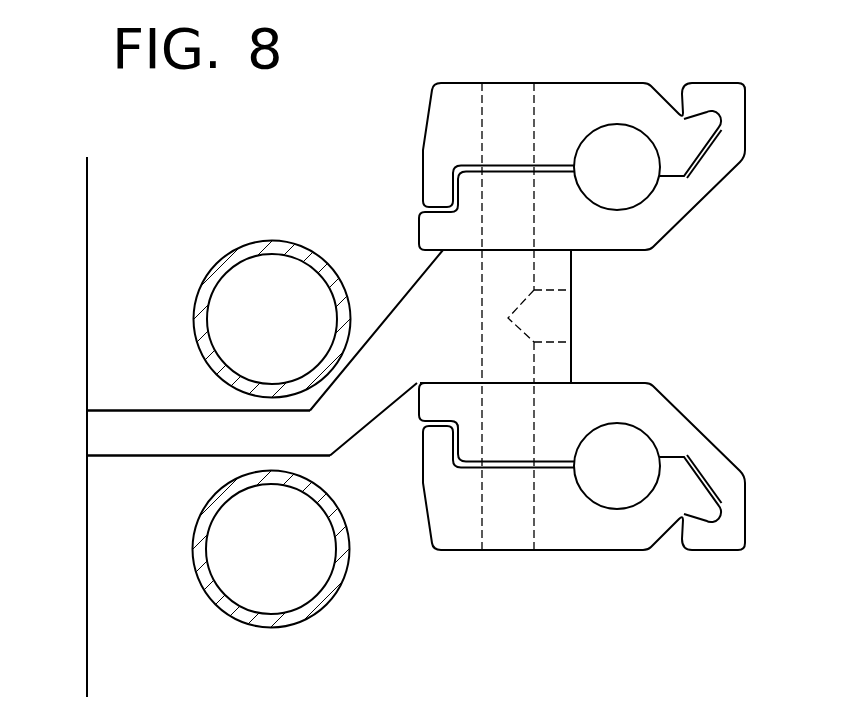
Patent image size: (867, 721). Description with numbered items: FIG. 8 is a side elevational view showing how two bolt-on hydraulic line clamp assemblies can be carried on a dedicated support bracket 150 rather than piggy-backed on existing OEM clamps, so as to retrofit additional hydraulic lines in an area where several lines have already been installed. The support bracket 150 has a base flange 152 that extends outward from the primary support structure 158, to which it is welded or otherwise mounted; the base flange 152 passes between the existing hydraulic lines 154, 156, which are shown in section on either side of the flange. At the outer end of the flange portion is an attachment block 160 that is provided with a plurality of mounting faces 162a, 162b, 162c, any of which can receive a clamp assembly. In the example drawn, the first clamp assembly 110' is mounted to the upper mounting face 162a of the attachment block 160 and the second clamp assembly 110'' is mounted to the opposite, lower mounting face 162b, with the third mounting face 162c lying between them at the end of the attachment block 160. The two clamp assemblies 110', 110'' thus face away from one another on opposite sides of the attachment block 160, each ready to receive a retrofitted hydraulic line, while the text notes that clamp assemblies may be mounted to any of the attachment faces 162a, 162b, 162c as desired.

The first clamp assembly 110' is at (582, 128).
The second clamp assembly 110'' is at (582, 506).
The support bracket 150 is at (153, 470).
The base flange 152 is at (165, 430).
The existing hydraulic line 154 is at (240, 258).
The existing hydraulic line 156 is at (312, 605).
The primary support structure 158 is at (87, 618).
The attachment block 160 is at (450, 300).
The mounting face 162a is at (553, 250).
The mounting face 162b is at (553, 385).
The mounting face 162c is at (571, 320).